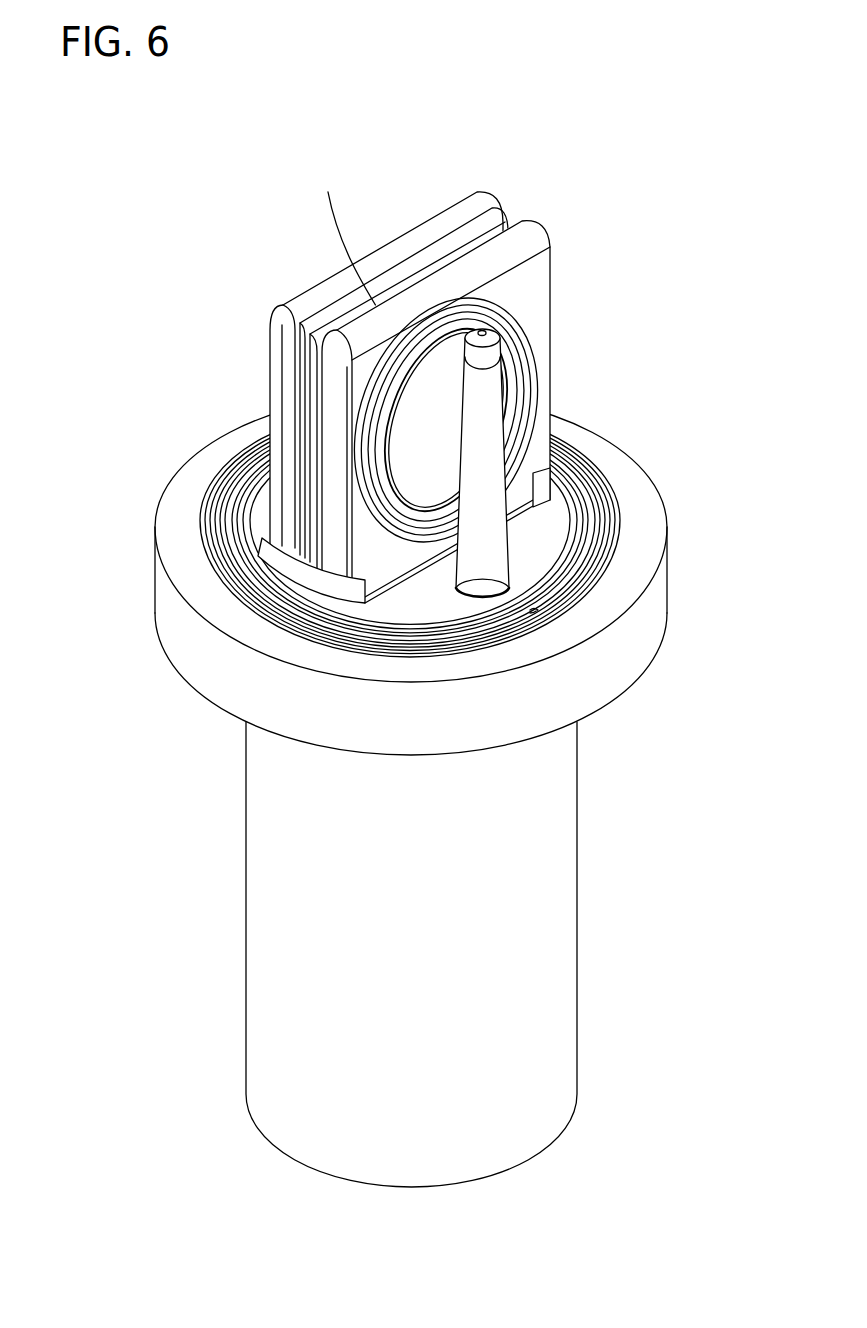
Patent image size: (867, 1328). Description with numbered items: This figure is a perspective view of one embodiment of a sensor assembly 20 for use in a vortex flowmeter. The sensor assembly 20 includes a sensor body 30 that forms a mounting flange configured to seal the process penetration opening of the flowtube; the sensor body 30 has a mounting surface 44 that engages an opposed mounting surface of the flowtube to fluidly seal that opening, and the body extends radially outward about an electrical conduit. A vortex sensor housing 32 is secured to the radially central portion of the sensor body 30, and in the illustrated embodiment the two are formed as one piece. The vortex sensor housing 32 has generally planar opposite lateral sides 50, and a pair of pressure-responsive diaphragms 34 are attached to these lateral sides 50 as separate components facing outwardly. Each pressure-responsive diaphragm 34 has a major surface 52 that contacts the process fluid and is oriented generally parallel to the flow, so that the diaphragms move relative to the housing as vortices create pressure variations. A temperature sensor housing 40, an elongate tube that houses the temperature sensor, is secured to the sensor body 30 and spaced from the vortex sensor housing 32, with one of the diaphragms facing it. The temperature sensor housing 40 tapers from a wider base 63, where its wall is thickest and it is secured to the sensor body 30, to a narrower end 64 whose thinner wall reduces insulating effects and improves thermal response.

The sensor assembly 20 is at (452, 663).
The sensor body 30 is at (523, 712).
The vortex sensor housing 32 is at (538, 278).
The pressure-responsive diaphragm 34 is at (513, 357).
The temperature sensor housing 40 is at (535, 492).
The mounting surface 44 is at (537, 613).
The lateral side 50 is at (393, 357).
The major surface 52 is at (368, 280).
The base 63 is at (483, 587).
The end 64 is at (482, 375).